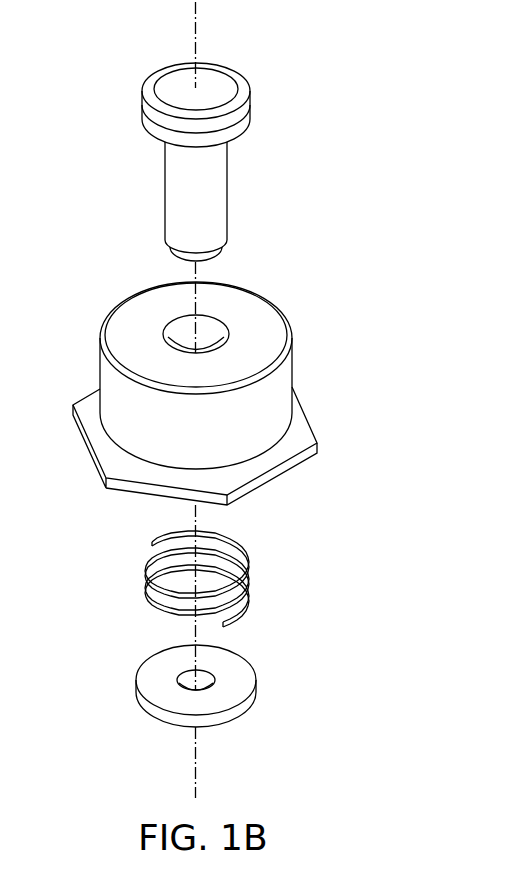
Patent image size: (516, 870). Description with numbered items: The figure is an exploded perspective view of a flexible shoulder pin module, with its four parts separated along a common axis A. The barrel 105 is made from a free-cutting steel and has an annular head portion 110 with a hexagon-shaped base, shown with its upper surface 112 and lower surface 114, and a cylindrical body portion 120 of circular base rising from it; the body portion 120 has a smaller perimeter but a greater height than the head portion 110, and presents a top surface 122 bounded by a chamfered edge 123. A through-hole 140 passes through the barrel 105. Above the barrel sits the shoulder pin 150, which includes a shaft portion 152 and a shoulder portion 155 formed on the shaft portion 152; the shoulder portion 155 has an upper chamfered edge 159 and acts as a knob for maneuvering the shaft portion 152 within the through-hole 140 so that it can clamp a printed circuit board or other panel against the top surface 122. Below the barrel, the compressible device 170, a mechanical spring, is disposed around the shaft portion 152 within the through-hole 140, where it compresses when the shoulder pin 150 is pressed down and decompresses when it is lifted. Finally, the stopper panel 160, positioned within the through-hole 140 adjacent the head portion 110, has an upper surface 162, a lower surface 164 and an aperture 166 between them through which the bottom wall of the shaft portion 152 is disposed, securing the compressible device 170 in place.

The central axis A is at (196, 12).
The barrel 105 is at (245, 410).
The head portion 110 is at (217, 466).
The upper surface 112 is at (113, 450).
The lower surface 114 is at (137, 492).
The body portion 120 is at (212, 367).
The top surface 122 is at (271, 324).
The chamfered edge 123 is at (108, 322).
The through-hole 140 is at (211, 326).
The shoulder pin 150 is at (182, 162).
The shaft portion 152 is at (213, 203).
The shoulder portion 155 is at (217, 86).
The upper chamfered edge 159 is at (238, 104).
The stopper panel 160 is at (209, 674).
The upper surface 162 is at (157, 665).
The lower surface 164 is at (232, 724).
The aperture 166 is at (211, 671).
The compressible device 170 is at (248, 571).